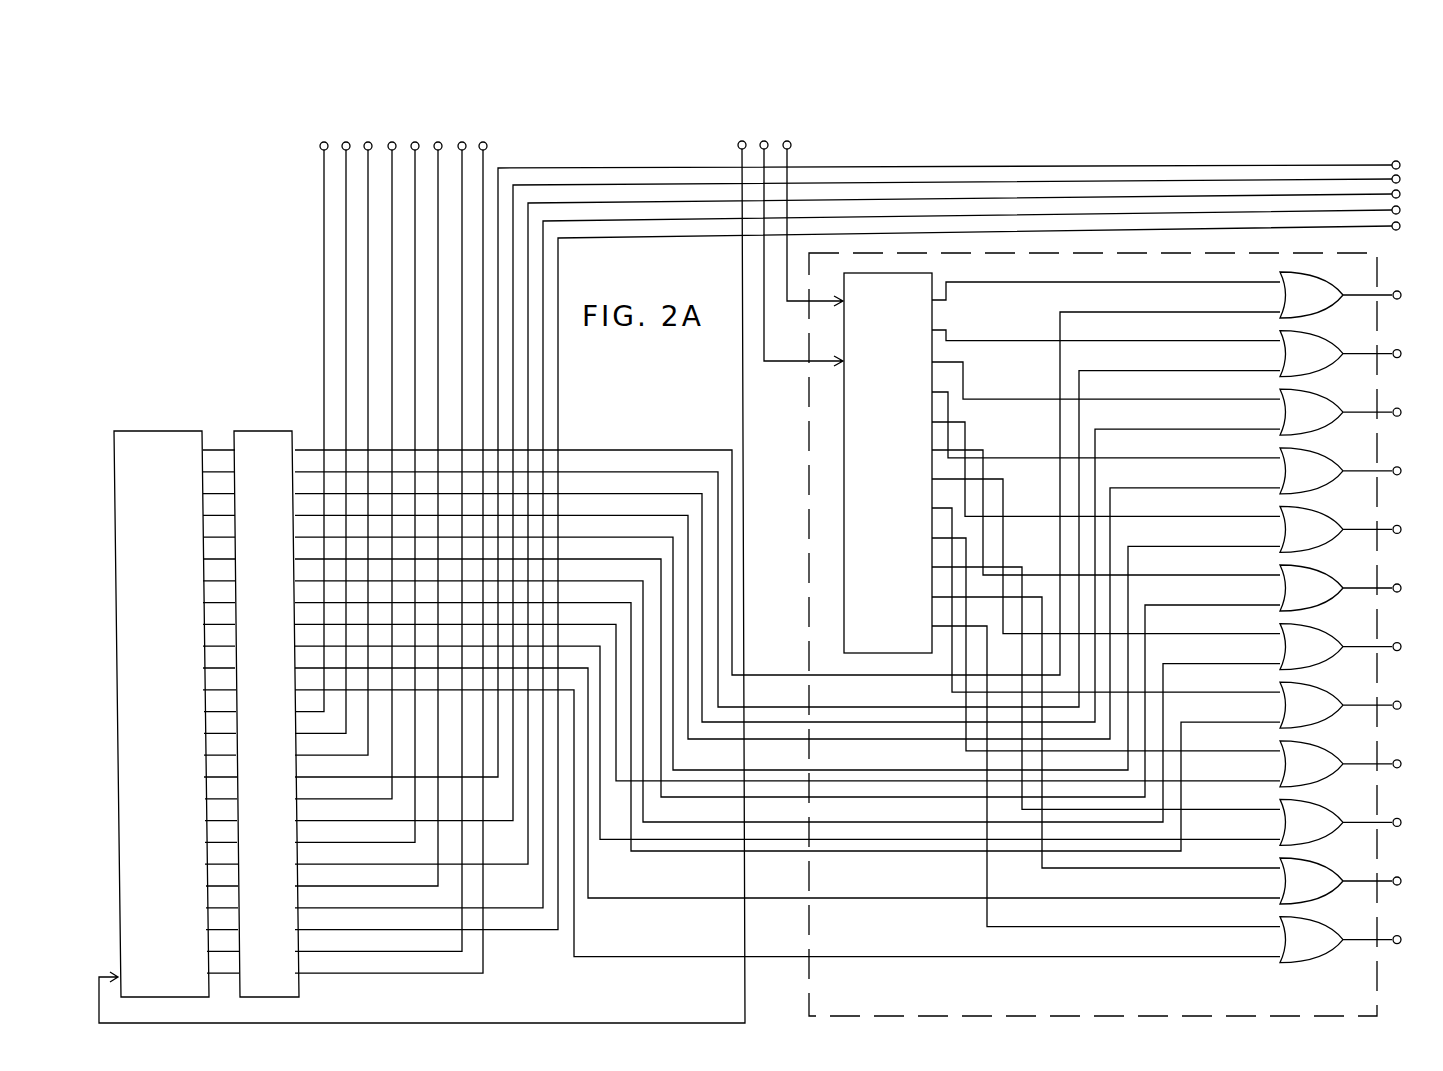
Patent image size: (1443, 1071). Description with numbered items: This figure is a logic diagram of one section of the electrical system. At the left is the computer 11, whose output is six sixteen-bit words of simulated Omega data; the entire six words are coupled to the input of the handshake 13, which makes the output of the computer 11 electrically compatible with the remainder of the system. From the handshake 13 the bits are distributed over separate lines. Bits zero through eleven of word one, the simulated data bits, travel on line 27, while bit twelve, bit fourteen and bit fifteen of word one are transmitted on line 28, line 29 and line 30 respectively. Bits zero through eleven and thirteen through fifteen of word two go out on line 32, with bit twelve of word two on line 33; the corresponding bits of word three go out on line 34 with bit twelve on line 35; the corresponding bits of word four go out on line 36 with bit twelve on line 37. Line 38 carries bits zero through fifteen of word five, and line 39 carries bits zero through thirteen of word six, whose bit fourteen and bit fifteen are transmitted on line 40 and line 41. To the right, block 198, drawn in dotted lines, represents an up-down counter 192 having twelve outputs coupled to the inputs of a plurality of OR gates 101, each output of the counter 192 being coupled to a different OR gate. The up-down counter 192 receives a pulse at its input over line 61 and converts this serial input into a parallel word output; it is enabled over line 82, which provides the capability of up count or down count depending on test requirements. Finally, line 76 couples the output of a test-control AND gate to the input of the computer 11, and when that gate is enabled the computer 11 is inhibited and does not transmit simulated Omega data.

The computer 11 is at (134, 440).
The handshake 13 is at (257, 440).
The line 27 is at (323, 685).
The line 28 is at (330, 707).
The line 29 is at (331, 728).
The line 30 is at (331, 750).
The line 32 is at (327, 766).
The line 33 is at (332, 794).
The line 34 is at (327, 809).
The line 35 is at (332, 837).
The line 36 is at (327, 853).
The line 37 is at (332, 881).
The line 38 is at (328, 896).
The line 39 is at (328, 918).
The line 40 is at (333, 946).
The line 41 is at (333, 968).
The line 61 is at (768, 150).
The line 76 is at (740, 152).
The line 82 is at (791, 150).
The OR gates 101 is at (1352, 924).
The up-down counter 192 is at (932, 275).
The block 198 is at (811, 604).